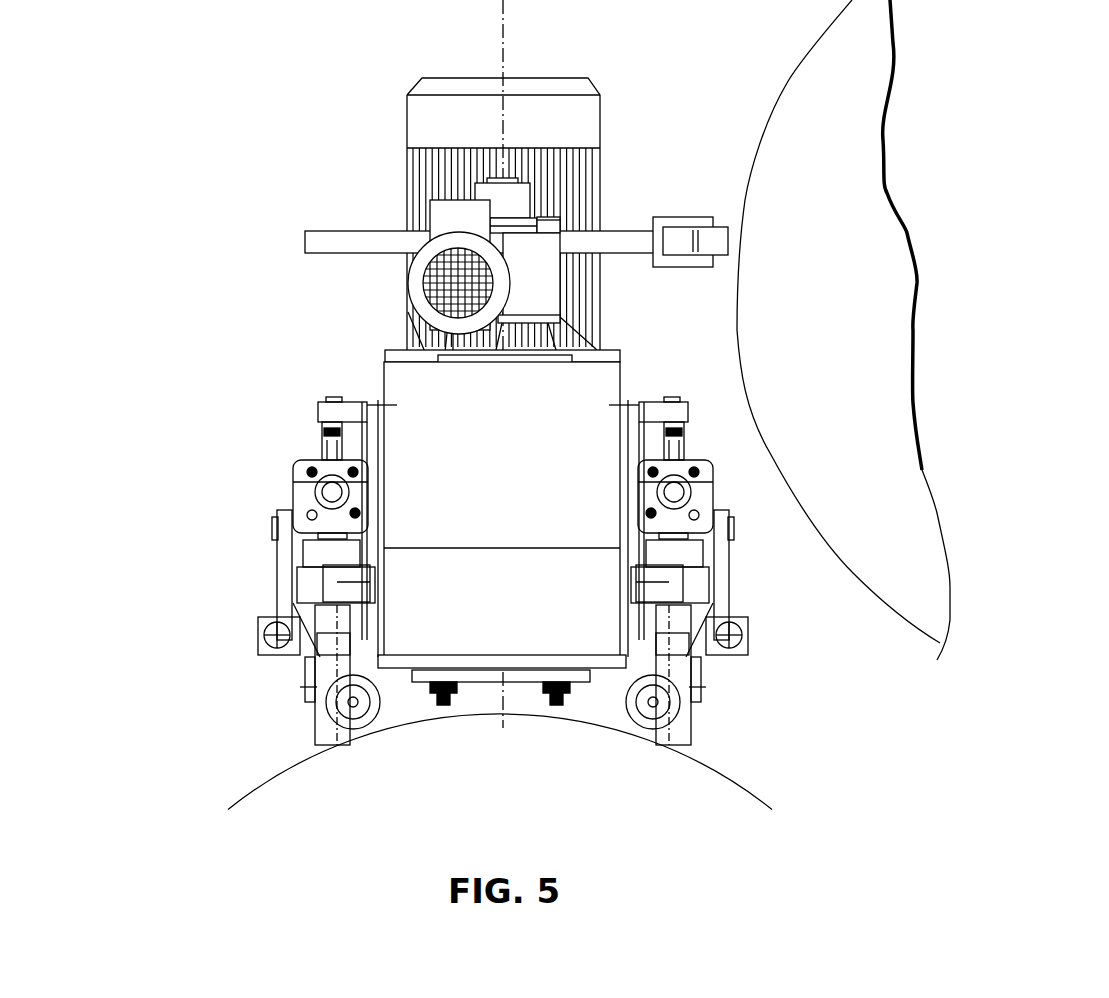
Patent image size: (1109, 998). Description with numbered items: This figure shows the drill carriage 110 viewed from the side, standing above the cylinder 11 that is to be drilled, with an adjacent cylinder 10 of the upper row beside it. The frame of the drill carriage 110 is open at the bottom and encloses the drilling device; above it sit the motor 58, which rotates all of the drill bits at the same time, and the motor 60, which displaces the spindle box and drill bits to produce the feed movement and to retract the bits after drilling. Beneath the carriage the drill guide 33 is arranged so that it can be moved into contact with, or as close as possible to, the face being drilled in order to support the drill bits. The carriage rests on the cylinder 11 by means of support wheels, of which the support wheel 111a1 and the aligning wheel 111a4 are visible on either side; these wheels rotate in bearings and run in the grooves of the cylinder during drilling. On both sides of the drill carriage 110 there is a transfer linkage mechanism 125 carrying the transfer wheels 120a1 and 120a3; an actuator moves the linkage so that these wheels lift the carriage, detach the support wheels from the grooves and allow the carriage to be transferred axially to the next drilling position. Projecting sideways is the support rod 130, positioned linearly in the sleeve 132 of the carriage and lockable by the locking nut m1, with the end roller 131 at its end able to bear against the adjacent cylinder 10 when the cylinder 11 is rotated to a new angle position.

The cylinder 10 is at (818, 225).
The cylinder 11 is at (261, 779).
The drill guide 33 is at (493, 676).
The motor 58 is at (420, 284).
The motor 60 is at (584, 108).
The drill carriage 110 is at (568, 433).
The support wheel 111a1 is at (641, 717).
The aligning wheel 111a4 is at (365, 717).
The transfer wheel 120a1 is at (664, 745).
The transfer wheel 120a3 is at (342, 745).
The linkage and movement mechanism 125 is at (245, 553).
The support rod 130 is at (638, 230).
The end roller 131 is at (711, 232).
The sleeve 132 is at (520, 230).
The locking nut m1 is at (553, 222).